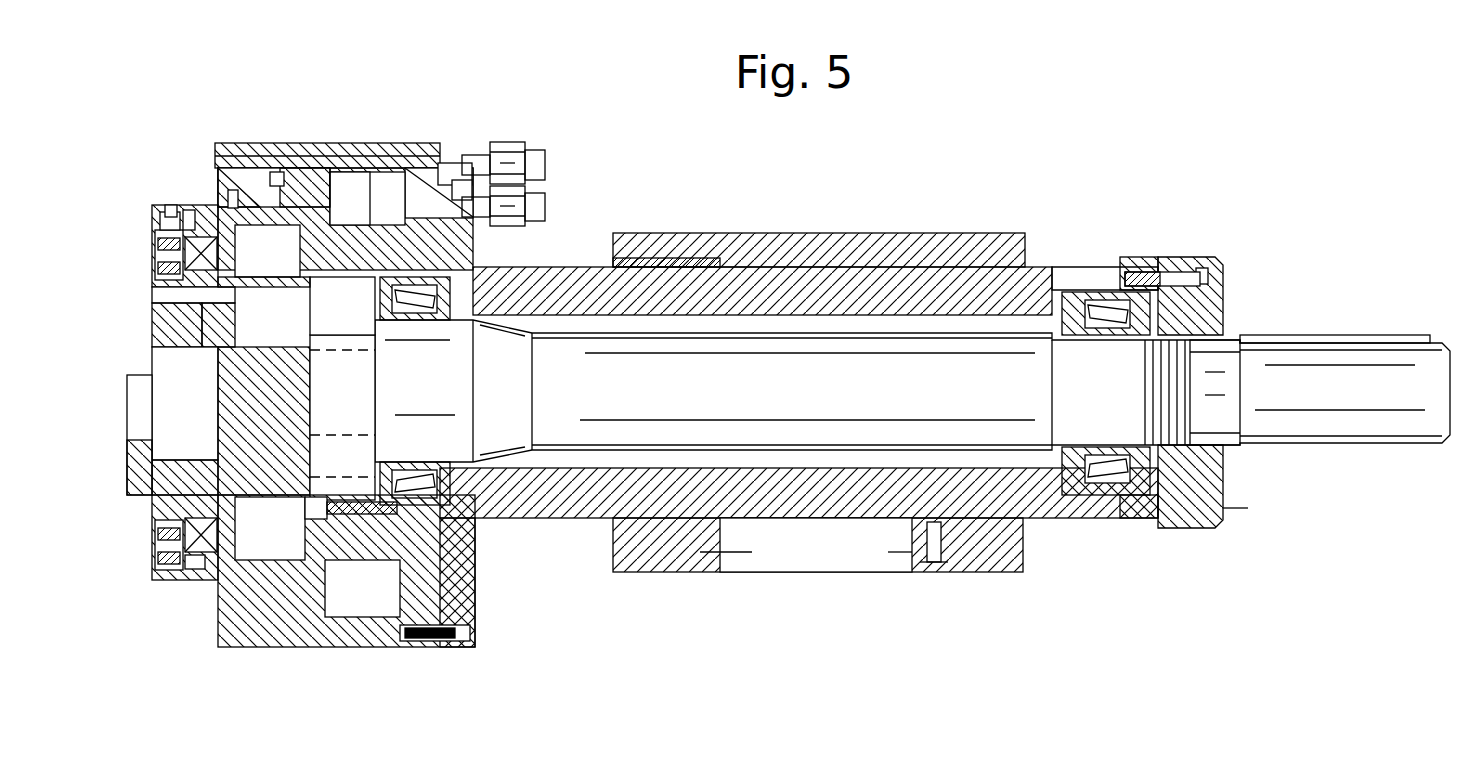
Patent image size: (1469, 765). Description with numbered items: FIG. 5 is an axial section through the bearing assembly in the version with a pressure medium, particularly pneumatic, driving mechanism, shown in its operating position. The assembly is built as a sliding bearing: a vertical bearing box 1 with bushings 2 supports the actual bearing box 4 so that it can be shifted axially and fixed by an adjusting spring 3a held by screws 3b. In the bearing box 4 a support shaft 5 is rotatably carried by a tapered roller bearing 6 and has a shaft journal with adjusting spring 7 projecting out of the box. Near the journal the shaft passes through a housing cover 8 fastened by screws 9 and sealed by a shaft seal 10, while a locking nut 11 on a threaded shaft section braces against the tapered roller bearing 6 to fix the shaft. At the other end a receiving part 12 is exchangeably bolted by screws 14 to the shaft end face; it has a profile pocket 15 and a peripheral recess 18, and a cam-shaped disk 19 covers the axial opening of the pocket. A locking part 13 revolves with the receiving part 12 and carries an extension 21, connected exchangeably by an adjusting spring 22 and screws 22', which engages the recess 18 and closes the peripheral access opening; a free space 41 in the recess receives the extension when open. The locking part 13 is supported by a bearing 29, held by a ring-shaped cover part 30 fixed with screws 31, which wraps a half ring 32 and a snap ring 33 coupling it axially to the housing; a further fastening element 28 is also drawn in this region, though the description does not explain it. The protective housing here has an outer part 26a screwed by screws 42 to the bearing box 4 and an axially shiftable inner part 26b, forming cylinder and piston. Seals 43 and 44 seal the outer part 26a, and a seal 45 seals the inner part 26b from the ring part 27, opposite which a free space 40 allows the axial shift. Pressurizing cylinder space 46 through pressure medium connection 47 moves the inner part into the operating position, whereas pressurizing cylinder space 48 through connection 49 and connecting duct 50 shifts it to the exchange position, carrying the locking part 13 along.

The flanged bearing box 1 is at (650, 250).
The bushings 2 is at (690, 262).
The adjusting spring 3a is at (900, 555).
The screws 3b is at (936, 560).
The bearing box 4 is at (555, 290).
The support shaft 5 is at (513, 350).
The tapered roller bearing 6 is at (1100, 300).
The shaft journal with adjusting spring 7 is at (1285, 340).
The housing cover 8 is at (1195, 262).
The screws 9 is at (1212, 272).
The shaft seal 10 is at (1225, 330).
The locking nut 11 is at (1162, 272).
The receiving part 12 is at (160, 540).
The locking part 13 is at (200, 237).
The screws 14 is at (168, 580).
The profile pocket 15 is at (175, 363).
The recess 18 is at (285, 345).
The cam-shaped disk 19 is at (138, 495).
The extension 21 is at (160, 332).
The adjusting spring 22 is at (167, 277).
The screws 22' is at (149, 314).
The outer part of protective housing 26a is at (395, 150).
The inner part of protective housing 26b is at (290, 150).
The ring part 27 is at (362, 245).
The fastening bolt 28 is at (316, 520).
The bearing 29 is at (205, 570).
The cover part 30 is at (189, 210).
The screws 31 is at (168, 214).
The half ring 32 is at (160, 252).
The snap ring 33 is at (170, 206).
The free space 40 is at (280, 560).
The free space 41 is at (290, 298).
The screws 42 is at (420, 641).
The seal 43 is at (445, 165).
The seal 44 is at (232, 190).
The seal 45 is at (362, 160).
The cylinder space 46 is at (352, 172).
The pressure medium connection 47 is at (548, 195).
The cylinder space 48 is at (300, 255).
The pressure medium connection 49 is at (505, 150).
The connecting duct 50 is at (452, 185).